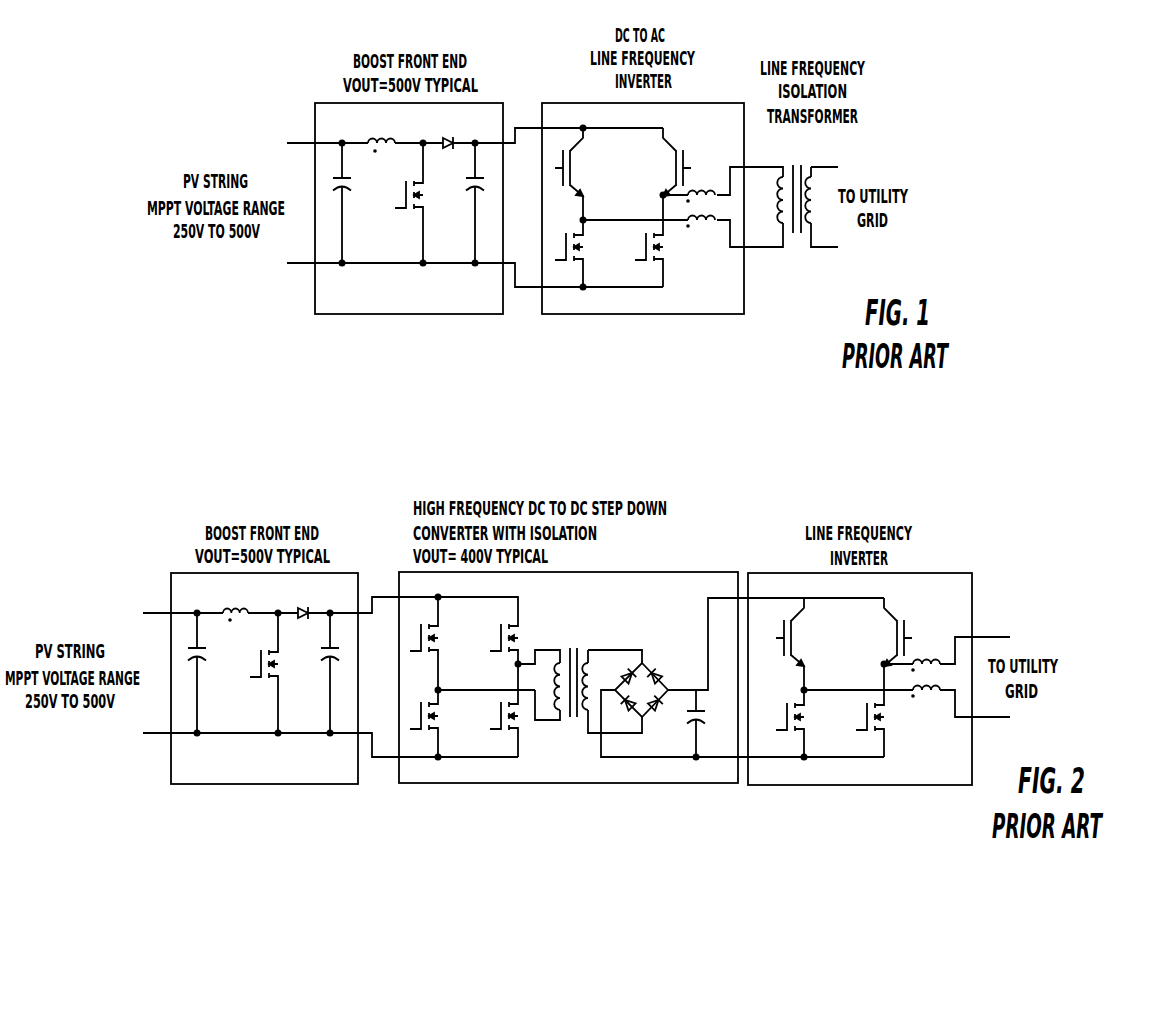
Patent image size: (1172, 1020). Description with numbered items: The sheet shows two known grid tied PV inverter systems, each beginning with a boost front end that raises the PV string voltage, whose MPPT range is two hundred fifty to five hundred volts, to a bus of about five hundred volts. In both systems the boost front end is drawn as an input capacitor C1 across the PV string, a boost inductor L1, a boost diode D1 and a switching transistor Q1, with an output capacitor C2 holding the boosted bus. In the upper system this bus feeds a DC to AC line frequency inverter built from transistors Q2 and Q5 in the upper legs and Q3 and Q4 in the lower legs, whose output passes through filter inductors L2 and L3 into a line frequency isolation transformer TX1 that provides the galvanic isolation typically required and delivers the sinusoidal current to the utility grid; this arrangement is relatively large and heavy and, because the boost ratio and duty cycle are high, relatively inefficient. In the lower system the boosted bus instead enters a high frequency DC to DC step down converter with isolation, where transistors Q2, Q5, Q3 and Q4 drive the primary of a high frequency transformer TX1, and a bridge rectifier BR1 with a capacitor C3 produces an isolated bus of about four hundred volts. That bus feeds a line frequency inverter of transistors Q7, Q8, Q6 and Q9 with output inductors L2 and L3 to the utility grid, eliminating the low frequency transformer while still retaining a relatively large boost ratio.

In FIG. 1, the input capacitor C1 is at (350, 177).
In FIG. 2, the input capacitor C1 is at (205, 646).
In FIG. 1, the boost inductor L1 is at (381, 156).
In FIG. 2, the boost inductor L1 is at (235, 625).
In FIG. 1, the boost diode D1 is at (448, 129).
In FIG. 2, the boost diode D1 is at (303, 598).
In FIG. 1, the boost switch transistor Q1 is at (407, 209).
In FIG. 2, the boost switch transistor Q1 is at (263, 678).
In FIG. 1, the boost output capacitor C2 is at (469, 199).
In FIG. 2, the boost output capacitor C2 is at (324, 669).
In FIG. 1, the bridge transistor Q2 is at (582, 174).
In FIG. 2, the bridge transistor Q2 is at (420, 652).
In FIG. 1, the bridge transistor Q3 is at (565, 260).
In FIG. 2, the bridge transistor Q3 is at (420, 729).
In FIG. 1, the bridge transistor Q4 is at (645, 260).
In FIG. 2, the bridge transistor Q4 is at (500, 729).
In FIG. 1, the bridge transistor Q5 is at (663, 174).
In FIG. 2, the bridge transistor Q5 is at (500, 652).
In FIG. 2, the inverter transistor Q6 is at (787, 730).
In FIG. 2, the inverter transistor Q7 is at (802, 644).
In FIG. 2, the inverter transistor Q8 is at (887, 644).
In FIG. 2, the inverter transistor Q9 is at (867, 730).
In FIG. 1, the output filter inductor L2 is at (704, 179).
In FIG. 2, the output filter inductor L2 is at (930, 648).
In FIG. 1, the output filter inductor L3 is at (701, 234).
In FIG. 2, the output filter inductor L3 is at (926, 705).
In FIG. 1, the isolation transformer TX1 is at (794, 180).
In FIG. 2, the isolation transformer TX1 is at (571, 660).
In FIG. 2, the bridge rectifier BR1 is at (658, 689).
In FIG. 2, the DC link capacitor C3 is at (689, 734).